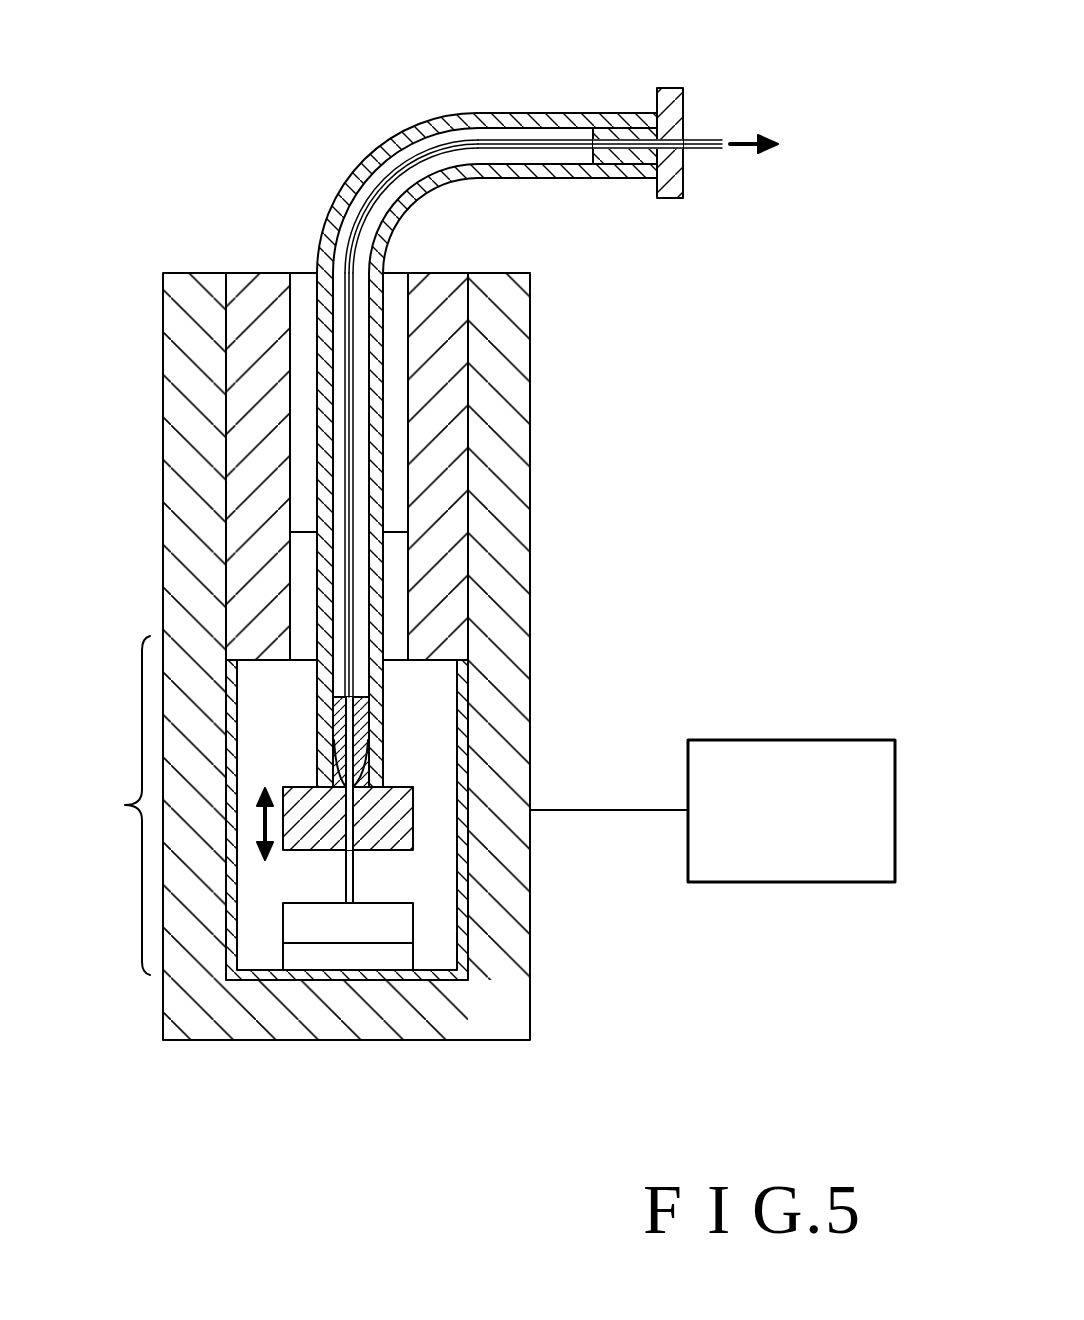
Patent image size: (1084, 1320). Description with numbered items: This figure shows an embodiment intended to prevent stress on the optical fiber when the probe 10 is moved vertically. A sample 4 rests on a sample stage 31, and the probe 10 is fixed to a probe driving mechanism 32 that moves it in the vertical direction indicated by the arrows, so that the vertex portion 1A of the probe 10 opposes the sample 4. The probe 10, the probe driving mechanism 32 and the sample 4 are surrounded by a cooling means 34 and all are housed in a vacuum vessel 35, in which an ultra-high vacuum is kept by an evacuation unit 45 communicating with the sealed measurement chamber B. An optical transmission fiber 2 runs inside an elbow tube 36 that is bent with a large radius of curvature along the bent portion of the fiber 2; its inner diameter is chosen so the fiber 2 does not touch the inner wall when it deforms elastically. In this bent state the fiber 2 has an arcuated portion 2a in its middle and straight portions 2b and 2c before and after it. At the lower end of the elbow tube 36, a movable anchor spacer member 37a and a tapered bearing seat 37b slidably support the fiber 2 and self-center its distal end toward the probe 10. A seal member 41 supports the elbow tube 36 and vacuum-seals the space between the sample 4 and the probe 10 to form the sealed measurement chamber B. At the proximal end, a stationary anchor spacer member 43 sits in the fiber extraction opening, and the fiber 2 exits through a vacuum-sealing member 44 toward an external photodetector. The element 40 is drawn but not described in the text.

The optical transmission fiber 2 is at (407, 370).
The arcuated portion 2a is at (378, 160).
The straight portion 2b is at (562, 141).
The straight portion 2c is at (347, 595).
The probe 10 is at (355, 863).
The vertex portion 1A is at (449, 1001).
The sample 4 is at (330, 927).
The sample stage 31 is at (380, 957).
The probe driving mechanism 32 is at (393, 823).
The cooling means 34 is at (463, 742).
The vacuum vessel 35 is at (510, 633).
The elbow tube 36 is at (383, 393).
The movable anchor spacer member 37a is at (367, 714).
The bearing seat 37b is at (383, 778).
The lower holder 40 is at (400, 550).
The seal member 41 is at (457, 350).
The stationary anchor spacer member 43 is at (630, 152).
The vacuum-sealing member 44 is at (671, 110).
The evacuation unit 45 is at (854, 740).
The sealed measurement chamber B is at (119, 822).